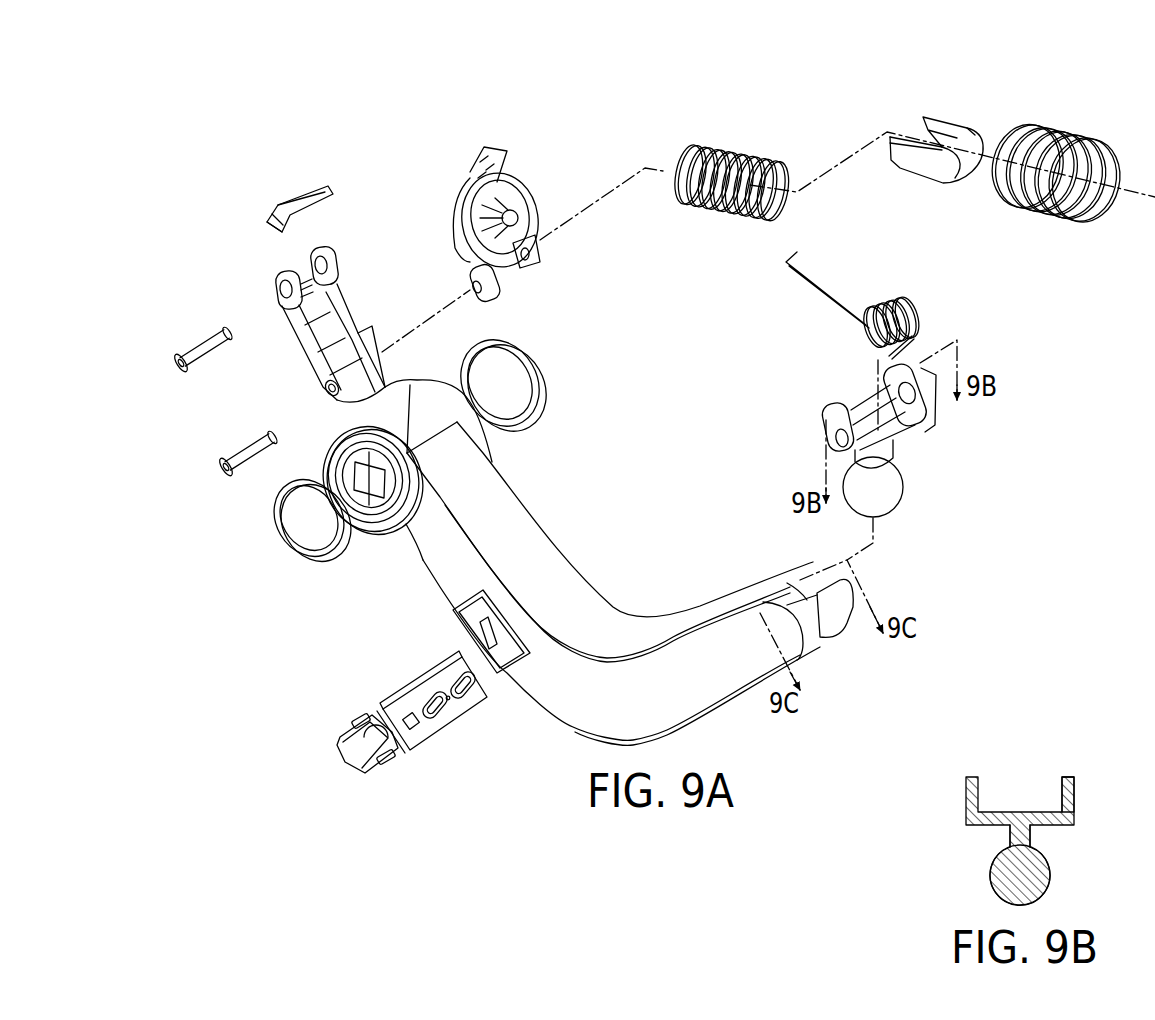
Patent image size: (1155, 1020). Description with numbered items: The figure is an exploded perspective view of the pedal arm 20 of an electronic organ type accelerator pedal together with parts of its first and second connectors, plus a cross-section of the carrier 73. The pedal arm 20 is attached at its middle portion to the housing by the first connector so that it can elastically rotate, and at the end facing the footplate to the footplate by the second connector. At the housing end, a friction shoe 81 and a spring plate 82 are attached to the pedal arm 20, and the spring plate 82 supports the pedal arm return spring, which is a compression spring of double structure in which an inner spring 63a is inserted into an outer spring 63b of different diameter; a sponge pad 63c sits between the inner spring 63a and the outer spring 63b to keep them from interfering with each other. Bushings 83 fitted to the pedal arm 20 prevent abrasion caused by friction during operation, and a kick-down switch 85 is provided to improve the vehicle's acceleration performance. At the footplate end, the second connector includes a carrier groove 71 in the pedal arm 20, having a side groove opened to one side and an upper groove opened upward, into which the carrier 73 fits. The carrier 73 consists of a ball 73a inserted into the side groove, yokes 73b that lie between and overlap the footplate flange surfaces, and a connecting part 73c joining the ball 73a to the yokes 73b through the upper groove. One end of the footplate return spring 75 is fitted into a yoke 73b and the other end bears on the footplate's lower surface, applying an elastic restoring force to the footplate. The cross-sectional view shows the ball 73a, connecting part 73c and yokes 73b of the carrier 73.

In FIG. 9A, the pedal arm 20 is at (578, 740).
In FIG. 9A, the carrier groove 71 is at (820, 633).
In FIG. 9A, the carrier 73 is at (930, 385).
In FIG. 9B, the carrier 73 is at (1058, 858).
In FIG. 9B, the ball 73a is at (1000, 884).
In FIG. 9B, the yokes 73b is at (1066, 780).
In FIG. 9B, the connecting part 73c is at (1010, 832).
In FIG. 9A, the footplate return spring 75 is at (908, 306).
In FIG. 9A, the inner spring 63a is at (720, 158).
In FIG. 9A, the outer spring 63b is at (1063, 143).
In FIG. 9A, the pad 63c is at (950, 123).
In FIG. 9A, the friction shoe 81 is at (292, 203).
In FIG. 9A, the spring plate 82 is at (510, 178).
In FIG. 9A, the bushings 83 is at (293, 534).
In FIG. 9A, the kick-down switch 85 is at (455, 712).